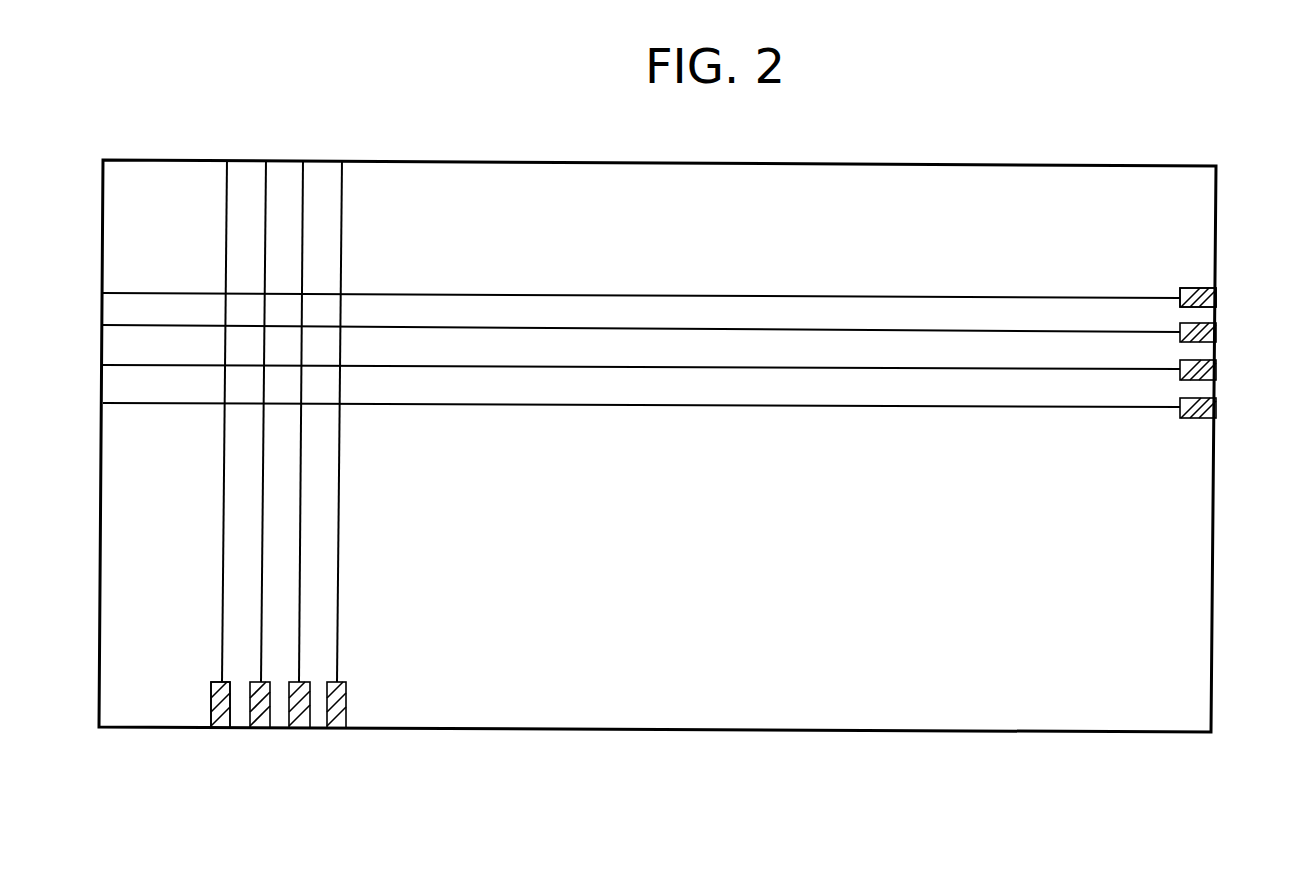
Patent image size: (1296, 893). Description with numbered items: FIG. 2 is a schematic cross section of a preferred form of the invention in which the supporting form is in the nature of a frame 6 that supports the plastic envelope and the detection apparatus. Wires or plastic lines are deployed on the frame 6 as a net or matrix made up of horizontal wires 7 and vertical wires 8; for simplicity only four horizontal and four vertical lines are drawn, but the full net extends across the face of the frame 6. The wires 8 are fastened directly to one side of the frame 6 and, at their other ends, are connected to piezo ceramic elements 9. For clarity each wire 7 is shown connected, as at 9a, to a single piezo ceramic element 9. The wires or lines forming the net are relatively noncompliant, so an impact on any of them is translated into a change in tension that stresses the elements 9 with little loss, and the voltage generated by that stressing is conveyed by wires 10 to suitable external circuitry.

The frame 6 is at (486, 154).
The horizontal wires 7 is at (731, 280).
The vertical wires 8 is at (200, 466).
The piezo ceramic elements 9 is at (1201, 271).
The connection of wire to piezo ceramic element 9a is at (186, 702).
The wires 10 is at (1218, 303).